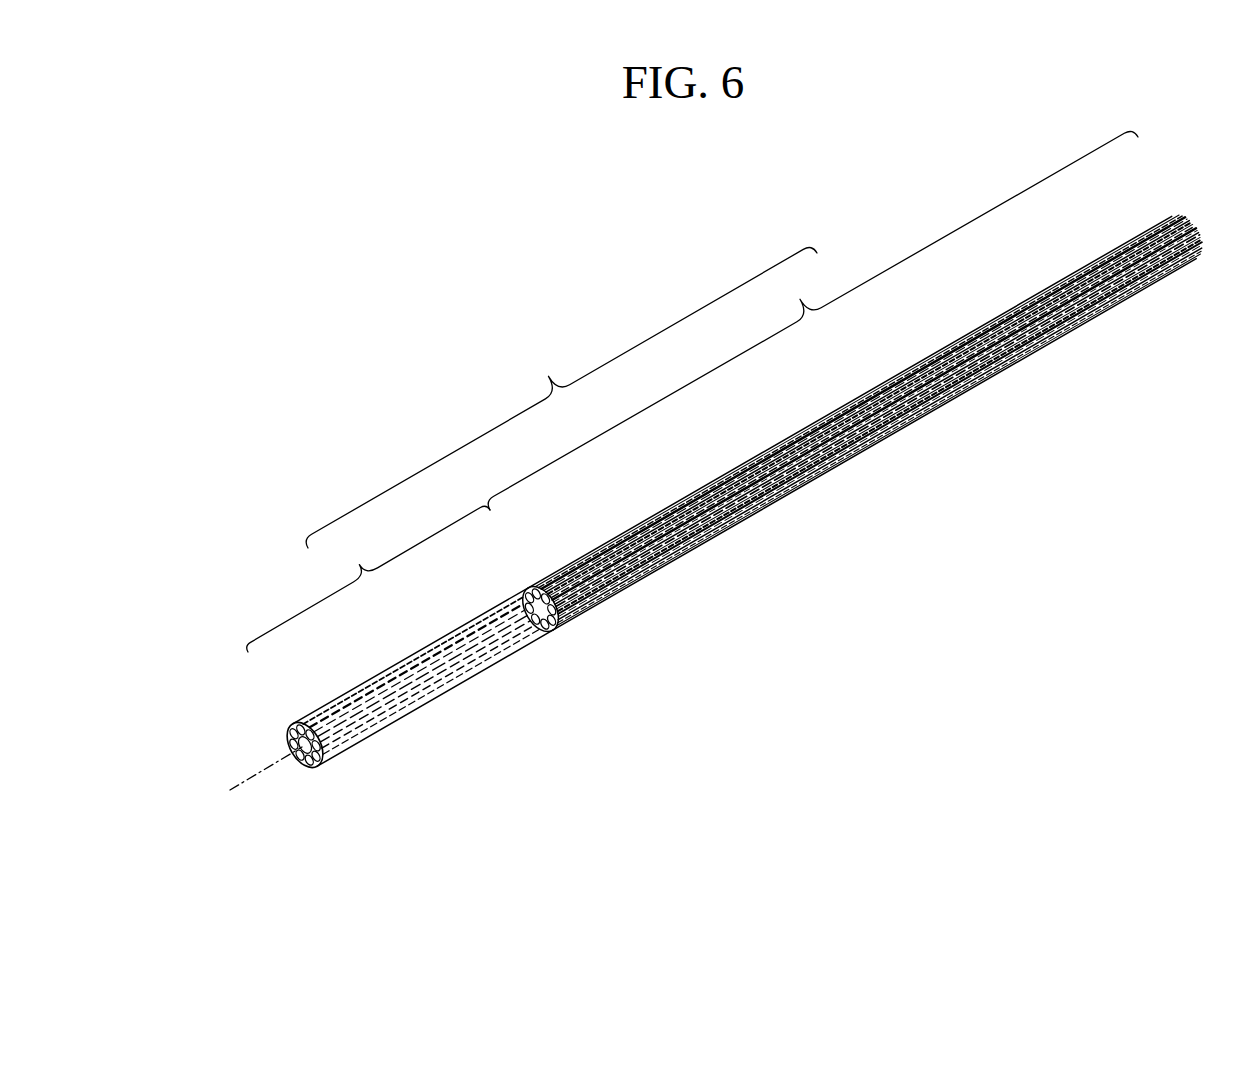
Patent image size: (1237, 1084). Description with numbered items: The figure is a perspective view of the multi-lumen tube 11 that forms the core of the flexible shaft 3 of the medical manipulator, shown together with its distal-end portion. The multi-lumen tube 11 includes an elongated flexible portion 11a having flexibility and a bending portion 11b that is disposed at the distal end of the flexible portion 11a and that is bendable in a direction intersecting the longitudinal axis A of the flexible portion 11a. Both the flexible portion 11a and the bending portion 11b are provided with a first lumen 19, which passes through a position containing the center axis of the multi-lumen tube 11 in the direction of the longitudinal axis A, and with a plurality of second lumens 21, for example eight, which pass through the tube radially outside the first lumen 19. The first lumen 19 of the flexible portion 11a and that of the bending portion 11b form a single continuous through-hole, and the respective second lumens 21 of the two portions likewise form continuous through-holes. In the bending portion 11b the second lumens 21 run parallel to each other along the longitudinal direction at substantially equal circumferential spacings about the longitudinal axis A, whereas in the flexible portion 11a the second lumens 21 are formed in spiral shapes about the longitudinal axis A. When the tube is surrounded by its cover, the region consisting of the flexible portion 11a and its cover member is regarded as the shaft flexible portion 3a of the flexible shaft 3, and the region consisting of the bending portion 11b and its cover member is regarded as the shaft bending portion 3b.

The flexible shaft 3 is at (561, 398).
The shaft flexible portion 3a is at (813, 320).
The shaft bending portion 3b is at (368, 579).
The multi-lumen tube 11 is at (617, 846).
The flexible portion 11a is at (852, 460).
The bending portion 11b is at (453, 692).
The first lumen 19 is at (298, 767).
The second lumens 21 is at (290, 734).
The longitudinal axis A is at (255, 777).